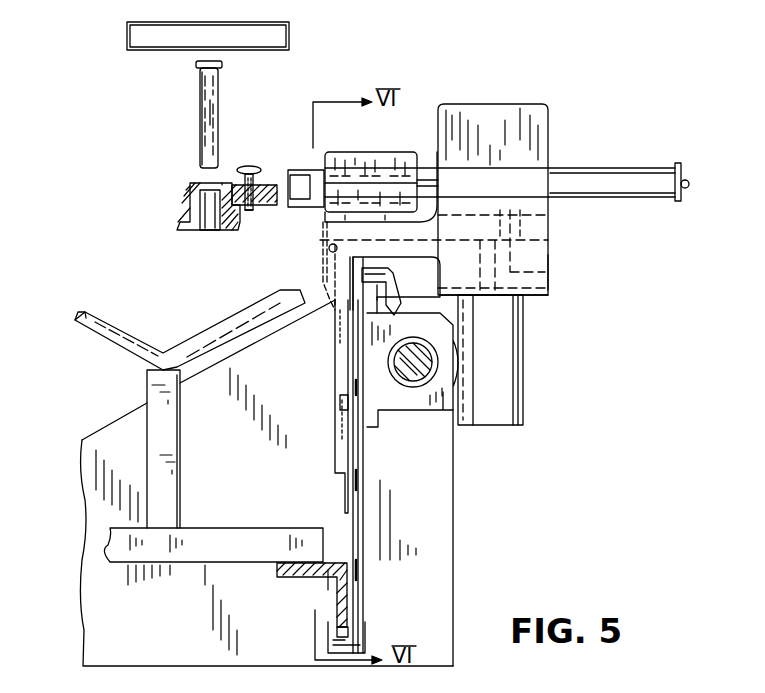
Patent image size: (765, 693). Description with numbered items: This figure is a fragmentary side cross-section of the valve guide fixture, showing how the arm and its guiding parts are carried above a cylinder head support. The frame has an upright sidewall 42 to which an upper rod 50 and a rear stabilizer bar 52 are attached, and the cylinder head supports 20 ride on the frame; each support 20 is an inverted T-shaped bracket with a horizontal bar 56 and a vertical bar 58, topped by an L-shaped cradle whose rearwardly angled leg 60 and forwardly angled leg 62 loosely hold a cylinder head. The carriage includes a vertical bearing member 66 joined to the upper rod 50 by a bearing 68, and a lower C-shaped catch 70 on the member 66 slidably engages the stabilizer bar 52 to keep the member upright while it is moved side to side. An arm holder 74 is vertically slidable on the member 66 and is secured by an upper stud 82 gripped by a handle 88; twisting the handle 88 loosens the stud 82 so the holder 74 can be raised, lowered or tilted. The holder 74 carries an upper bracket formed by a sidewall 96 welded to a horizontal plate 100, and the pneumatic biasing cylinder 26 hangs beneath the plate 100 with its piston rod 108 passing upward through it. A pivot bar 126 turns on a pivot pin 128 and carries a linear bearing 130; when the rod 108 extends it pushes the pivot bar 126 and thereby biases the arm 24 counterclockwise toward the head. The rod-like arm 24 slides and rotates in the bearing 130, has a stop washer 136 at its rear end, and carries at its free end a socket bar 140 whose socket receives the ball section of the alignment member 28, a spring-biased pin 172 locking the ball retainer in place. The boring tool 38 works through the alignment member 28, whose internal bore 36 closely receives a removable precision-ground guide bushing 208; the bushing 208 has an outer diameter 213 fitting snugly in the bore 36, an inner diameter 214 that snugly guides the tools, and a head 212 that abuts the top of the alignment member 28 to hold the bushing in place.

The upright supports 20 is at (142, 333).
The arm 24 is at (612, 168).
The biasing cylinder 26 is at (530, 366).
The alignment member 28 is at (178, 231).
The internal bore 36 is at (207, 232).
The boring tool 38 is at (289, 47).
The upright sidewall 42 is at (200, 615).
The rod 50 is at (402, 362).
The stabilizer bar 52 is at (298, 578).
The horizontal bar 56 is at (280, 520).
The vertical bar 58 is at (180, 461).
The rearwardly angled leg 60 is at (232, 330).
The forwardly angled leg 62 is at (74, 316).
The vertical bearing member 66 is at (356, 485).
The bearing 68 is at (441, 410).
The C-shaped catch 70 is at (348, 650).
The arm holder 74 is at (335, 404).
The upper stud 82 is at (255, 168).
The handle 88 is at (396, 307).
The sidewall 96 is at (498, 143).
The horizontal plate 100 is at (545, 294).
The piston rod 108 is at (548, 272).
The pivot bar 126 is at (545, 226).
The pivot pin 128 is at (318, 247).
The linear bearing 130 is at (356, 153).
The stop washer 136 is at (673, 202).
The socket bar 140 is at (190, 189).
The spring-biased pin 172 is at (251, 210).
The guide bushing 208 is at (197, 146).
The head 212 is at (196, 65).
The outer diameter 213 is at (200, 97).
The inner diameter 214 is at (213, 128).